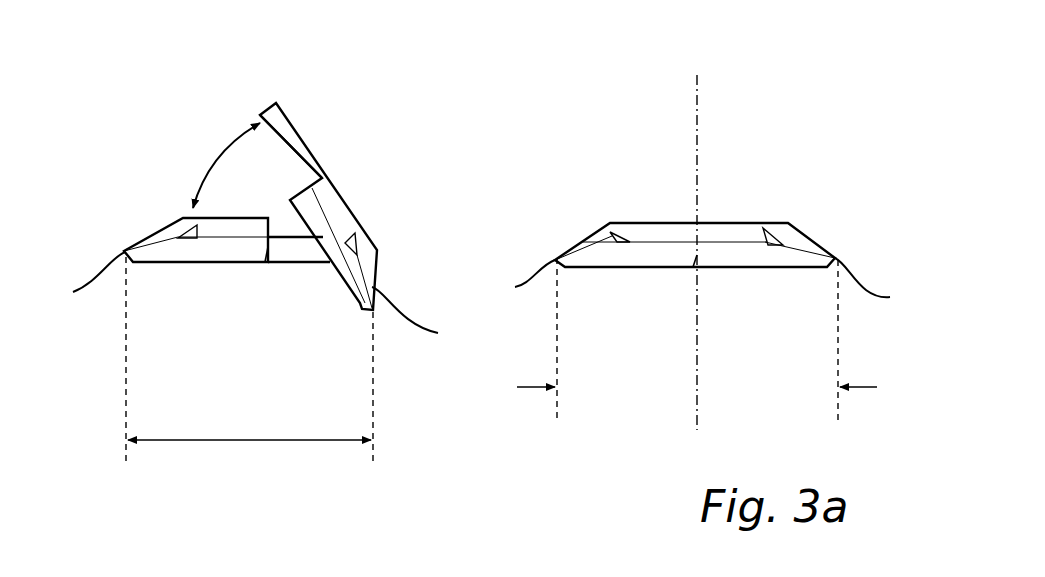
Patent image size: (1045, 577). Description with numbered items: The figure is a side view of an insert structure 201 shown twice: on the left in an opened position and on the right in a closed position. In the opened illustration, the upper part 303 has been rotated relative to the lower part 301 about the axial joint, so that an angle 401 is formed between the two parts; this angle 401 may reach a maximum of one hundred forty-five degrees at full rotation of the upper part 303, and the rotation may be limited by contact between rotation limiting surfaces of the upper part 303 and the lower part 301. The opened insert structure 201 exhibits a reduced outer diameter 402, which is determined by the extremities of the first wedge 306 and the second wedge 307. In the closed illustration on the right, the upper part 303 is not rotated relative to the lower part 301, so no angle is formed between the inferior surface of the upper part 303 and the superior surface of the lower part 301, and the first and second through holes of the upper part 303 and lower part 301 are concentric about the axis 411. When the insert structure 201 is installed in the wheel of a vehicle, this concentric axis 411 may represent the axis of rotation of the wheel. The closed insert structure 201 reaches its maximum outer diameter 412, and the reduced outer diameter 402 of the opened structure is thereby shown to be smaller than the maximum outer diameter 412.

The insert structure 201 is at (402, 88).
The lower part 301 is at (217, 236).
The upper part 303 is at (327, 200).
The first wedge 306 is at (292, 276).
The second wedge 307 is at (661, 301).
The angle 401 is at (218, 160).
The reduced outer diameter 402 is at (210, 440).
The axis 411 is at (697, 137).
The maximum outer diameter 412 is at (707, 340).